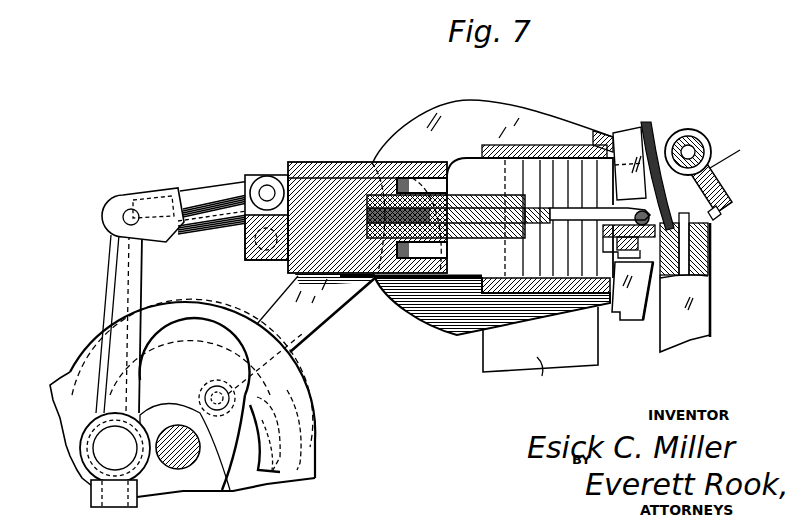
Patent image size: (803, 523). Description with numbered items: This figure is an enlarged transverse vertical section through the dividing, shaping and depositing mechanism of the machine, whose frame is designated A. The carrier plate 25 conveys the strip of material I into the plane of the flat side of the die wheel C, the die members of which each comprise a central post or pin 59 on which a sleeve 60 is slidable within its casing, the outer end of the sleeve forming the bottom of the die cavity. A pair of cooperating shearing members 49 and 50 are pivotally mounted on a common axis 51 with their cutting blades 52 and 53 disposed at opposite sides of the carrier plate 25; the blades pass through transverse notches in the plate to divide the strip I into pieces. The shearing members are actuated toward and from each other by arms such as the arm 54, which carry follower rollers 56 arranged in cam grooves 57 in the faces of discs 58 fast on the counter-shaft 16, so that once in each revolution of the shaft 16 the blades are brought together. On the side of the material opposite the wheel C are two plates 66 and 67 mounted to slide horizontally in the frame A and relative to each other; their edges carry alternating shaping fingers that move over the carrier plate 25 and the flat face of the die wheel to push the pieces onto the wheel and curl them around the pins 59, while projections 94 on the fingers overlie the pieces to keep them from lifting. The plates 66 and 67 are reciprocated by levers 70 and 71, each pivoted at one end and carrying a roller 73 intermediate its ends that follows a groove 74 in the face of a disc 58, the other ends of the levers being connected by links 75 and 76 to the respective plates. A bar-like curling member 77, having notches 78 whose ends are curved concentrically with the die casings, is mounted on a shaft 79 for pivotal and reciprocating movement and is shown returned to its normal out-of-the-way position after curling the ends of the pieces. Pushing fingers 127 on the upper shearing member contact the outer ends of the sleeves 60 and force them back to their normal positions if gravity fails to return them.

The counter-shaft 16 is at (184, 470).
The carrier plate 25 is at (655, 233).
The shearing member 49 is at (543, 123).
The shearing member 50 is at (463, 332).
The common axis 51 is at (373, 282).
The cutting blade 52 is at (653, 212).
The cutting blade 53 is at (690, 288).
The arm 54 is at (311, 345).
The follower roller 56 is at (235, 408).
The cam groove 57 is at (300, 467).
The disc 58 is at (182, 310).
The central post or pin 59 is at (690, 217).
The sleeve 60 is at (708, 260).
The plate 66 is at (347, 183).
The plate 67 is at (284, 264).
The lever 70 is at (122, 292).
The lever 71 is at (108, 257).
The roller 73 is at (89, 477).
The groove 74 is at (276, 478).
The link 75 is at (207, 200).
The link 76 is at (234, 229).
The curling member 77 is at (733, 199).
The notch 78 is at (723, 212).
The shaft 79 is at (702, 143).
The projection 94 is at (733, 175).
The pushing finger 127 is at (658, 130).
The frame A is at (540, 353).
The wheel C is at (655, 340).
The strip of material I is at (727, 155).